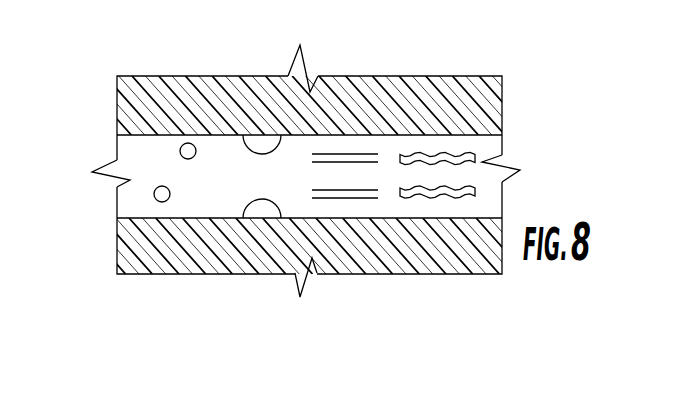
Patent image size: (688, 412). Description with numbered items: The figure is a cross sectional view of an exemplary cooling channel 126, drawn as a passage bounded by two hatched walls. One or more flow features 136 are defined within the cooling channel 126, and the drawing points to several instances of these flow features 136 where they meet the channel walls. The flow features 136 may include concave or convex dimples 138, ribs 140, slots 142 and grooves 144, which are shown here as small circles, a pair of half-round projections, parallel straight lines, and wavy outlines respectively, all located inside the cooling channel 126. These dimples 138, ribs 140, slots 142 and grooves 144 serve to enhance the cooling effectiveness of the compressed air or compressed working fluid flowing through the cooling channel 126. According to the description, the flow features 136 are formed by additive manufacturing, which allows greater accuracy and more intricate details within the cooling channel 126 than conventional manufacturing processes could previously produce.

The cooling channel 126 is at (128, 207).
The flow feature 136 is at (198, 138).
The dimples 138 is at (166, 202).
The ribs 140 is at (260, 210).
The slots 142 is at (347, 191).
The grooves 144 is at (442, 200).